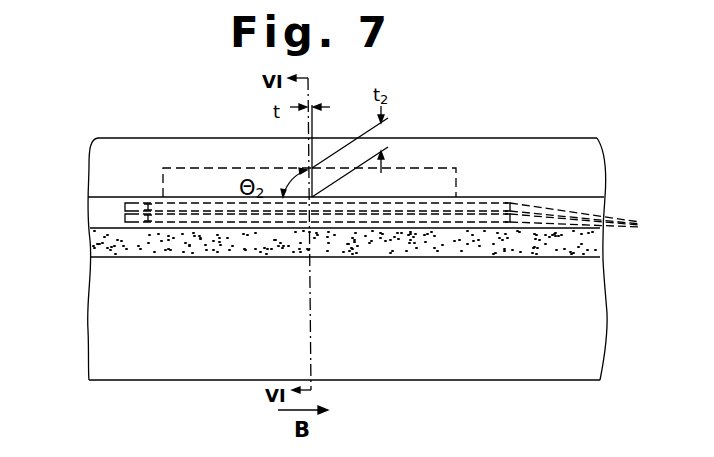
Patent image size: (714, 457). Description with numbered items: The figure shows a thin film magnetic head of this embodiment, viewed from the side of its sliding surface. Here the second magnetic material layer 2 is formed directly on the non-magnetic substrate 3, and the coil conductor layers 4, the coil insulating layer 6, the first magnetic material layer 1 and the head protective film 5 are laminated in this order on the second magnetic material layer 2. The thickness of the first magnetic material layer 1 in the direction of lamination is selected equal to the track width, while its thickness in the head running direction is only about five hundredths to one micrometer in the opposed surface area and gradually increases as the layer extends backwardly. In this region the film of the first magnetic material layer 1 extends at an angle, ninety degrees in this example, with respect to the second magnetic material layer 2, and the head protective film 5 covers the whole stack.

The first magnetic material layer 1 is at (313, 167).
The second magnetic material layer 2 is at (573, 245).
The non-magnetic substrate 3 is at (596, 331).
The coil conductor layers 4 is at (393, 223).
The head protective film 5 is at (551, 158).
The coil insulating layer 6 is at (97, 212).